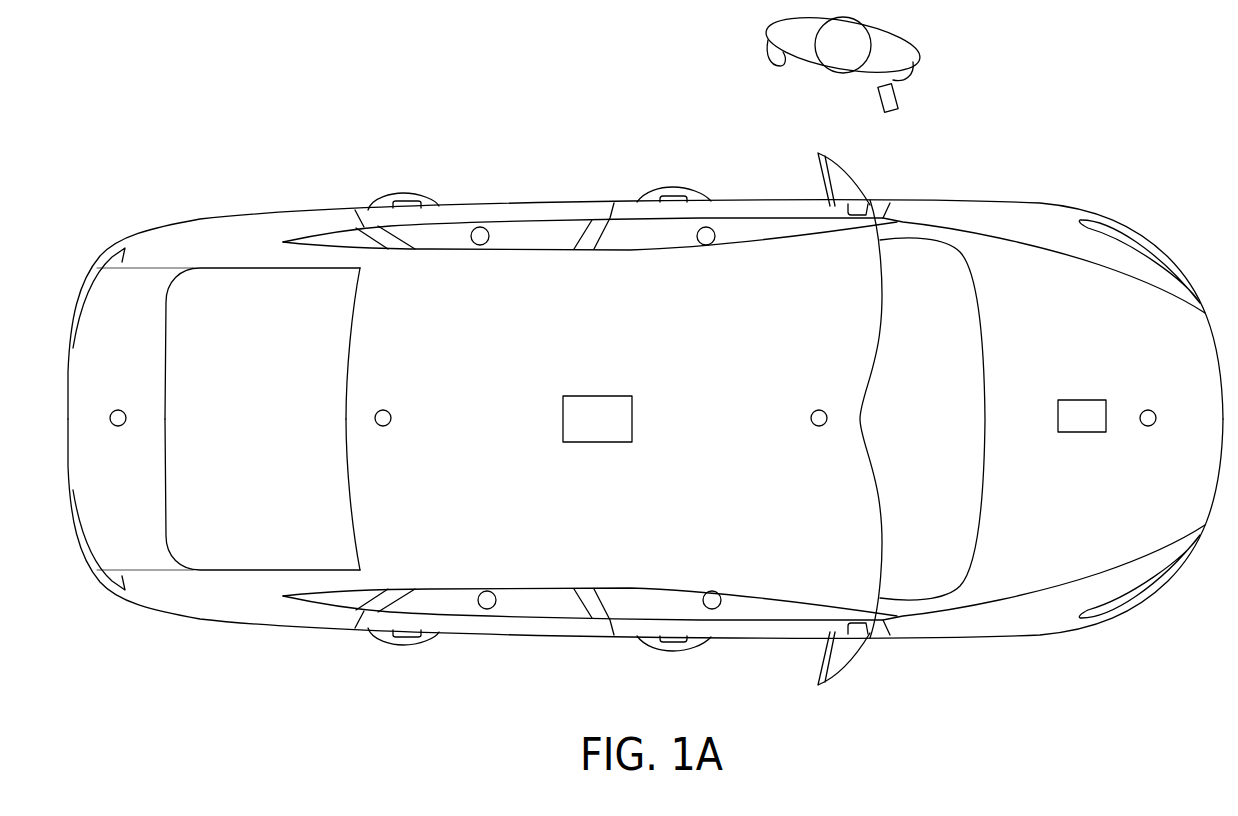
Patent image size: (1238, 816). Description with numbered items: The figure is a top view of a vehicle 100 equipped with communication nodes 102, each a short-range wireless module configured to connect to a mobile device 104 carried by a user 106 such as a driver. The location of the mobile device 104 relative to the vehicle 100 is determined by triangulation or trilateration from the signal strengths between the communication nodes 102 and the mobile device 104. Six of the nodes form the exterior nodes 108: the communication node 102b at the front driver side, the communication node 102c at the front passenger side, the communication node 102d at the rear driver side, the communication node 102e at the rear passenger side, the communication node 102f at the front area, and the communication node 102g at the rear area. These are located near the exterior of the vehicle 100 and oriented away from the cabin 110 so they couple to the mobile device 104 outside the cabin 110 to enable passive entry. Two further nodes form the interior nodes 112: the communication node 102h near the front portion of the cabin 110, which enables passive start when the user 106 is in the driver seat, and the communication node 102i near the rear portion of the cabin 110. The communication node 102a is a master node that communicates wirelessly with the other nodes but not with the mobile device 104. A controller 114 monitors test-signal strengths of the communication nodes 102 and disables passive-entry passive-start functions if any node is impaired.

The vehicle 100 is at (1040, 200).
The communication nodes 102 is at (224, 645).
The communication node 102a is at (596, 396).
The communication node 102b is at (703, 246).
The communication node 102c is at (710, 591).
The communication node 102d is at (480, 246).
The communication node 102e is at (488, 591).
The communication node 102f is at (1148, 410).
The communication node 102g is at (118, 410).
The communication node 102h is at (811, 418).
The communication node 102i is at (391, 417).
The mobile device 104 is at (900, 100).
The user 106 is at (768, 38).
The exterior nodes 108 is at (198, 190).
The cabin 110 is at (610, 527).
The interior nodes 112 is at (876, 421).
The controller 114 is at (1098, 429).